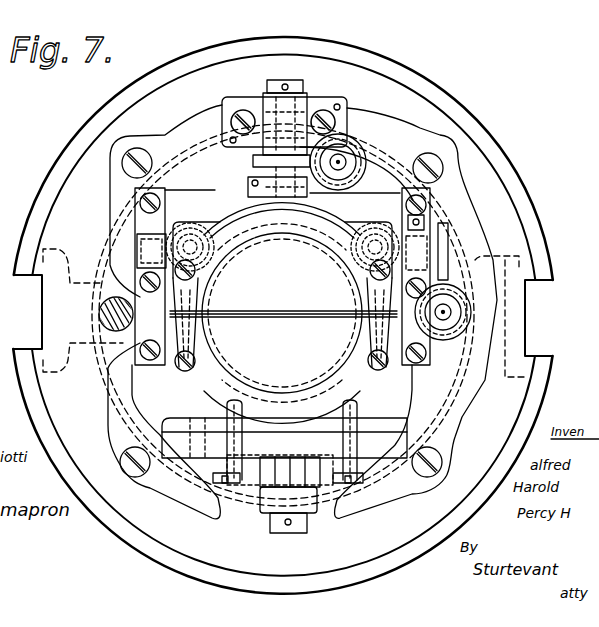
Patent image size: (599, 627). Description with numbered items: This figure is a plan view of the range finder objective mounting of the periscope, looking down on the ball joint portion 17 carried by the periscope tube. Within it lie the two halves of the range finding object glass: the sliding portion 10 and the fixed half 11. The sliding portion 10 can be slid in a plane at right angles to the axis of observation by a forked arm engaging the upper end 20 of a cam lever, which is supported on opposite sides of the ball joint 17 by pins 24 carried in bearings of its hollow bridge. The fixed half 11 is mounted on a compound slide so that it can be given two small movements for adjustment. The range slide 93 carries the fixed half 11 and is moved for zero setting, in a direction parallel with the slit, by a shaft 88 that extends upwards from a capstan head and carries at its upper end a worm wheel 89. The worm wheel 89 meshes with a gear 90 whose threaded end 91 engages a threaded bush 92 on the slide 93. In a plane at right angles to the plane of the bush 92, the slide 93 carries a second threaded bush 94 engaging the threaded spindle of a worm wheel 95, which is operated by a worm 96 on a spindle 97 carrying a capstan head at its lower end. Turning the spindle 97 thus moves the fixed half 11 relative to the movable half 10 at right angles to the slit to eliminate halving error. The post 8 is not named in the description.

The post 8 is at (367, 404).
The sliding portion of the object glass 10 is at (282, 313).
The fixed half of the object glass 11 is at (282, 313).
The ball joint portion 17 is at (500, 484).
The upper end of the cam lever 20 is at (268, 473).
The pins 24 is at (293, 523).
The shaft 88 is at (342, 158).
The worm wheel 89 is at (365, 148).
The gear 90 is at (278, 158).
The threaded end 91 is at (253, 160).
The threaded bush 92 is at (305, 202).
The range slide 93 is at (355, 205).
The second threaded bush 94 is at (427, 230).
The worm wheel 95 is at (447, 250).
The worm 96 is at (445, 340).
The spindle 97 is at (447, 313).